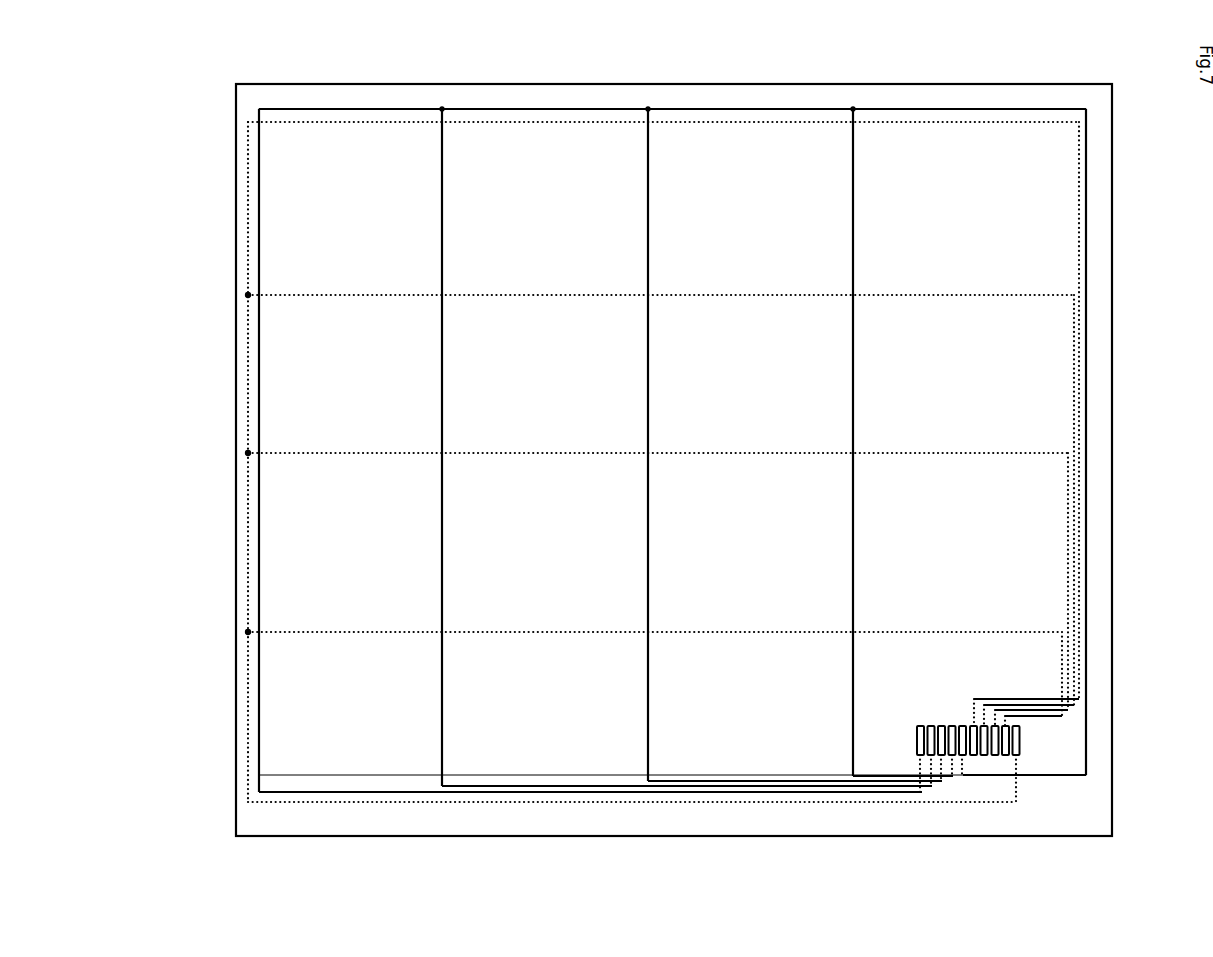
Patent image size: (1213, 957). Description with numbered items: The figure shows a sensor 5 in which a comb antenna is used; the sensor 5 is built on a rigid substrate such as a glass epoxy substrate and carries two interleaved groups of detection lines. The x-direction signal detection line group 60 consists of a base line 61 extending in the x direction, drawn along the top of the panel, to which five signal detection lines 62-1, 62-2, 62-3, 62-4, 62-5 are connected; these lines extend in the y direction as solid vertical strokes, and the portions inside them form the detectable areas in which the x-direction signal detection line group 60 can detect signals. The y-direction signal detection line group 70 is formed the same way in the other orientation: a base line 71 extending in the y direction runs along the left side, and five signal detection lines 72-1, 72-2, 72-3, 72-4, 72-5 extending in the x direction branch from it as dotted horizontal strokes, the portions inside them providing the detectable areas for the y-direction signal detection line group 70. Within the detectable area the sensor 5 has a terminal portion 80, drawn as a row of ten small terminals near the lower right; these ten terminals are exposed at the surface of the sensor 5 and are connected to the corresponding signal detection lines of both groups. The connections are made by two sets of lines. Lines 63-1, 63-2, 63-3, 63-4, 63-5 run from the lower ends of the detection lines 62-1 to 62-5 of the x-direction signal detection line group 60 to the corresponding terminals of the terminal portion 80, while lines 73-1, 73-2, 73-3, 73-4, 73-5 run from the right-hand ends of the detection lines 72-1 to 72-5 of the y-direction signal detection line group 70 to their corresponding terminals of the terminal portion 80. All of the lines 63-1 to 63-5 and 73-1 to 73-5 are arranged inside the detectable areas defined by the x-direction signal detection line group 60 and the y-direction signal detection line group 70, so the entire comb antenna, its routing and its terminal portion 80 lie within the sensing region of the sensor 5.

The sensor 5 is at (245, 98).
The x-direction signal detection line group 60 is at (746, 96).
The base line 61 is at (603, 108).
The signal detection line 62-1 is at (267, 140).
The signal detection line 62-2 is at (445, 140).
The signal detection line 62-3 is at (653, 138).
The signal detection line 62-4 is at (858, 140).
The signal detection line 62-5 is at (1093, 137).
The line 63-1 is at (410, 793).
The line 63-2 is at (542, 787).
The line 63-3 is at (702, 782).
The line 63-4 is at (884, 778).
The line 63-5 is at (1045, 777).
The y-direction signal detection line group 70 is at (243, 458).
The base line 71 is at (247, 268).
The signal detection line 72-1 is at (300, 128).
The signal detection line 72-2 is at (295, 298).
The signal detection line 72-3 is at (290, 455).
The signal detection line 72-4 is at (290, 636).
The signal detection line 72-5 is at (277, 806).
The line 73-1 is at (1080, 210).
The line 73-2 is at (1075, 377).
The line 73-3 is at (1069, 535).
The line 73-4 is at (1063, 658).
The line 73-5 is at (1017, 760).
The terminal portion 80 is at (1034, 739).